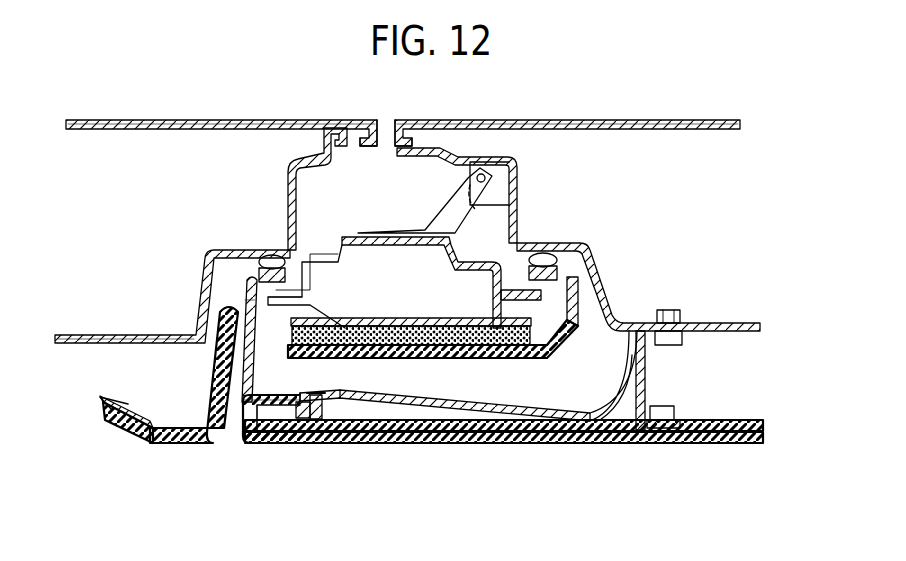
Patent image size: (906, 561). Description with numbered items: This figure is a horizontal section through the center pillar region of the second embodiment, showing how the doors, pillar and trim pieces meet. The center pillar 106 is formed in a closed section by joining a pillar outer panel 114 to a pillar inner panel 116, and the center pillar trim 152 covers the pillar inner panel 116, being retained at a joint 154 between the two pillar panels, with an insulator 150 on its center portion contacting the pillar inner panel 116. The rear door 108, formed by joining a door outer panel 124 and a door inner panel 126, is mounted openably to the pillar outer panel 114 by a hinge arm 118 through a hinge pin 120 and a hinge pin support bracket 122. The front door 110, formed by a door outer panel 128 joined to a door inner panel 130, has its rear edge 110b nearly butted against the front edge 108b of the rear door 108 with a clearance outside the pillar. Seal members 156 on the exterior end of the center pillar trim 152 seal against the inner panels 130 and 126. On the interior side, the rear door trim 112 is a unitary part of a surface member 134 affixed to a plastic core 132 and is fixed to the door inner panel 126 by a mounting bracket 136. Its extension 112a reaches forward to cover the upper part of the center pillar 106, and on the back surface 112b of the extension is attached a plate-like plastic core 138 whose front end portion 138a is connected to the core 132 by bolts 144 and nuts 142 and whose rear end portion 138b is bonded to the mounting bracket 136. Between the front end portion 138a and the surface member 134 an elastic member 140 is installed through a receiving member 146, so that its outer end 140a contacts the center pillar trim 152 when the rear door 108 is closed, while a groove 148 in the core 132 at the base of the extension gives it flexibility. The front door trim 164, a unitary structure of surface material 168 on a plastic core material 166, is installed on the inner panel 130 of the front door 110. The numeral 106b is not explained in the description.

The center pillar 106 is at (380, 243).
The foam pad 106b is at (430, 326).
The rear door 108 is at (673, 118).
The front edge 108b is at (400, 118).
The front door 110 is at (283, 118).
The rear edge 110b is at (373, 118).
The rear door trim 112 is at (504, 456).
The extension 112a is at (631, 446).
The surface 112b is at (495, 443).
The pillar outer panel 114 is at (348, 236).
The pillar inner panel 116 is at (385, 330).
The hinge arm 118 is at (445, 216).
The hinge pin 120 is at (478, 178).
The hinge pin support bracket 122 is at (503, 197).
The door outer panel 124 is at (670, 131).
The door inner panel 126 is at (728, 323).
The door outer panel 128 is at (123, 131).
The door inner panel 130 is at (105, 335).
The plastic core 132 is at (504, 434).
The surface member 134 is at (504, 462).
The mounting bracket 136 is at (646, 382).
The plastic core 138 is at (468, 376).
The front end portion 138a is at (302, 392).
The rear end portion 138b is at (626, 354).
The elastic member 140 is at (234, 400).
The outer end 140a is at (281, 378).
The nuts 142 is at (310, 418).
The bolts 144 is at (326, 412).
The receiving member 146 is at (268, 427).
The groove 148 is at (604, 410).
The insulator 150 is at (252, 331).
The center pillar trim 152 is at (250, 293).
The joint 154 is at (303, 290).
The seal members 156 is at (235, 252).
The front door trim 164 is at (102, 462).
The plastic core material 166 is at (137, 440).
The surface material 168 is at (150, 446).